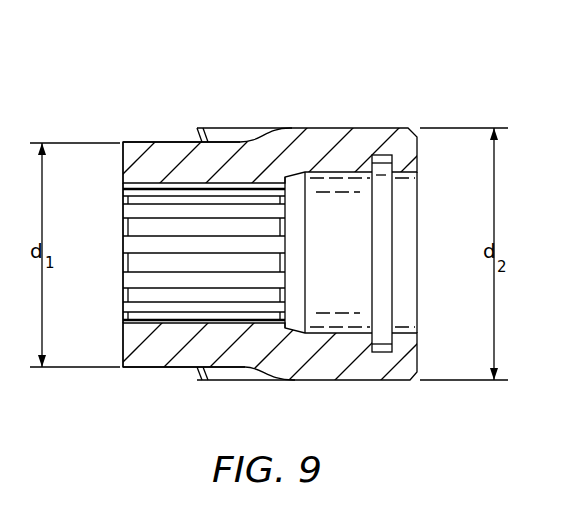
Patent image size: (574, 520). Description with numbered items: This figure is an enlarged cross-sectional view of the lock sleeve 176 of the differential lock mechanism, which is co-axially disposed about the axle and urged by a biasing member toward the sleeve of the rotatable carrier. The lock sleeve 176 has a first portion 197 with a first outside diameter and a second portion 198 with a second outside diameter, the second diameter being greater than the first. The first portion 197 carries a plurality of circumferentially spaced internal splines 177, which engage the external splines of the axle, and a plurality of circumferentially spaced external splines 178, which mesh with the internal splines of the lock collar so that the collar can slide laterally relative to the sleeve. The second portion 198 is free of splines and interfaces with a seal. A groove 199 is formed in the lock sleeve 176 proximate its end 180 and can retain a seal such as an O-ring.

The lock sleeve 176 is at (316, 69).
The internal splines 177 is at (130, 238).
The external splines 178 is at (238, 128).
The end 180 is at (420, 143).
The first portion 197 is at (167, 131).
The second portion 198 is at (373, 126).
The groove 199 is at (402, 352).